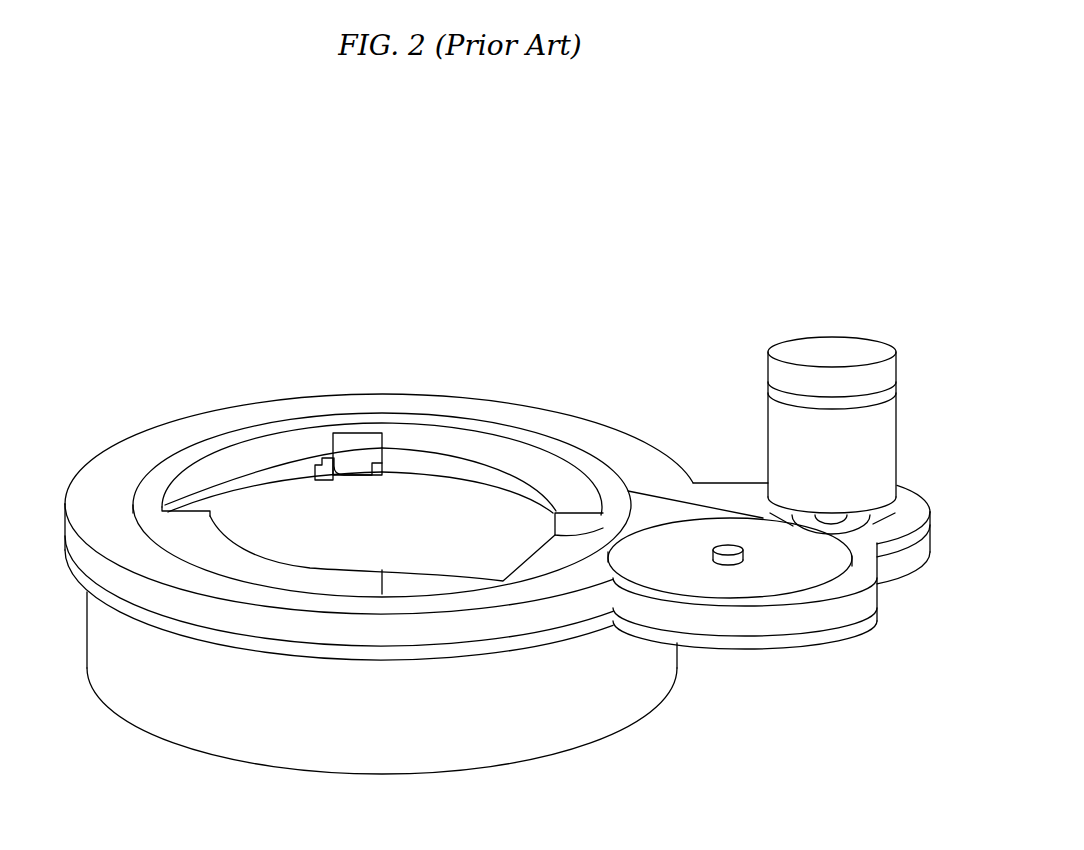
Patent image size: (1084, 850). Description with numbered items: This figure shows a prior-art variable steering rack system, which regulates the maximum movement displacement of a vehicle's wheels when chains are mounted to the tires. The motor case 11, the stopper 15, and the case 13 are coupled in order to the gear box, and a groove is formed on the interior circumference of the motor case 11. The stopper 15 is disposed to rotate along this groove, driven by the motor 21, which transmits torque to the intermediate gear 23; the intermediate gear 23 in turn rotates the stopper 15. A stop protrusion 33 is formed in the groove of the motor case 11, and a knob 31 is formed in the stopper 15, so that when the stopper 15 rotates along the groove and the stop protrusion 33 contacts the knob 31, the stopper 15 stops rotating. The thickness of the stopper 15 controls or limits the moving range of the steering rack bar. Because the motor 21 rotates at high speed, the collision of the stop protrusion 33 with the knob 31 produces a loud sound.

The motor case 11 is at (897, 552).
The case 13 is at (377, 733).
The stopper 15 is at (450, 443).
The motor 21 is at (817, 356).
The intermediate gear 23 is at (752, 580).
The knob 31 is at (352, 468).
The stop protrusion 33 is at (328, 474).